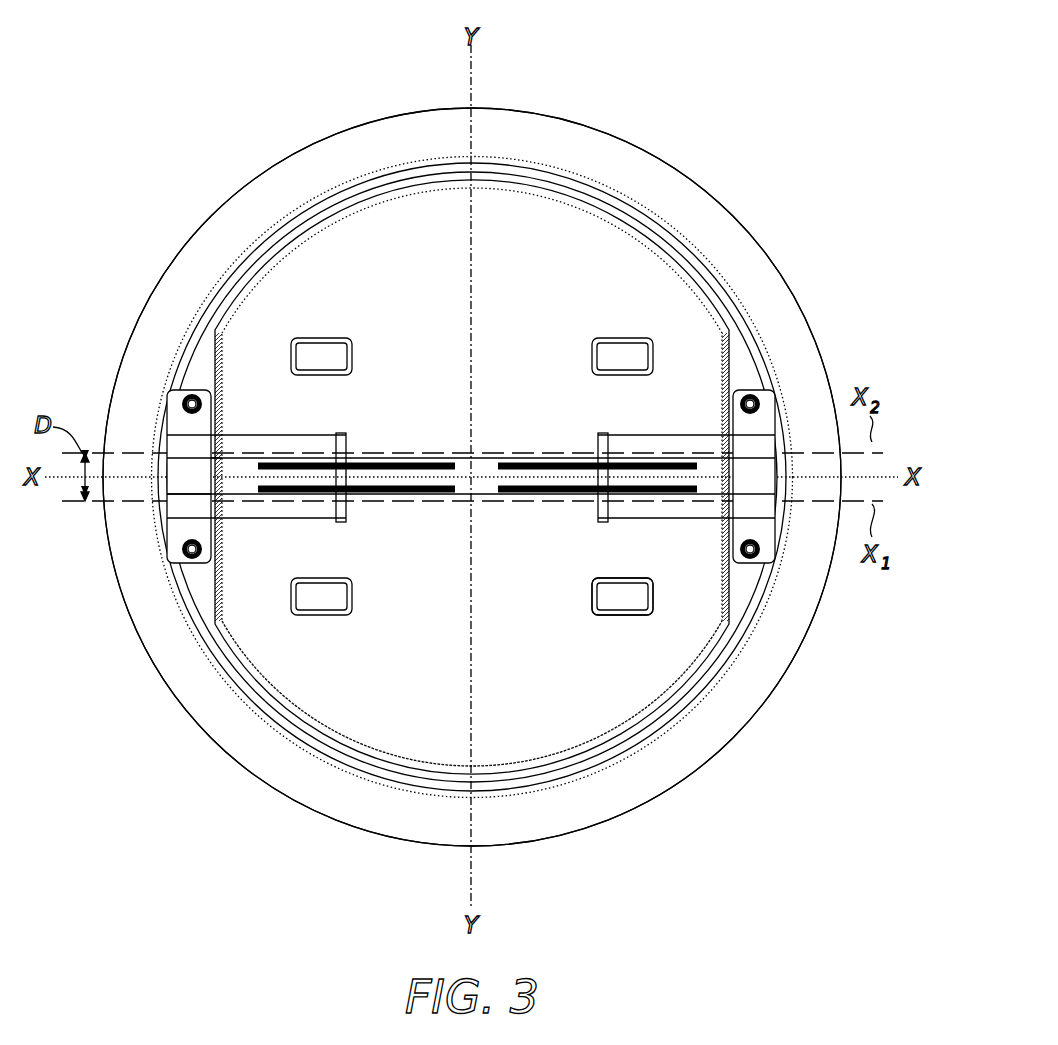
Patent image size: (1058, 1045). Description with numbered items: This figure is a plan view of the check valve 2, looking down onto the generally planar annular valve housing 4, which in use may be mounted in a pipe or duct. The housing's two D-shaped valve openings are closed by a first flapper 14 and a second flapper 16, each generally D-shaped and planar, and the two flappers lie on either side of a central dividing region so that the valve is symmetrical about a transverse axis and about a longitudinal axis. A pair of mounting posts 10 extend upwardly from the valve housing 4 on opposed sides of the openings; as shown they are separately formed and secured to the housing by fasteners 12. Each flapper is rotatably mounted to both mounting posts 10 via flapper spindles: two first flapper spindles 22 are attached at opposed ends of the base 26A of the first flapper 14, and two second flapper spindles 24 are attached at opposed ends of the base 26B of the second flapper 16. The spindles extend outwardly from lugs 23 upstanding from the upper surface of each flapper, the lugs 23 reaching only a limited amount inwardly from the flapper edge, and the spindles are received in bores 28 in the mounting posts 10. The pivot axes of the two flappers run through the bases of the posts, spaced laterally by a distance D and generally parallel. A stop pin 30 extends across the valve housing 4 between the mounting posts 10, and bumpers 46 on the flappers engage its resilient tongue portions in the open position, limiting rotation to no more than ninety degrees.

The check valve 2 is at (757, 121).
The valve housing 4 is at (716, 731).
The mounting post 10 is at (174, 400).
The fastener 12 is at (760, 405).
The first flapper 14 is at (576, 722).
The second flapper 16 is at (562, 238).
The first flapper spindle 22 is at (202, 508).
The lug 23 is at (313, 440).
The second flapper spindle 24 is at (202, 445).
The base of the first flapper 26A is at (418, 491).
The base of the second flapper 26B is at (418, 463).
The bore 28 is at (198, 490).
The stop pin 30 is at (222, 468).
The bumper 46 is at (622, 607).